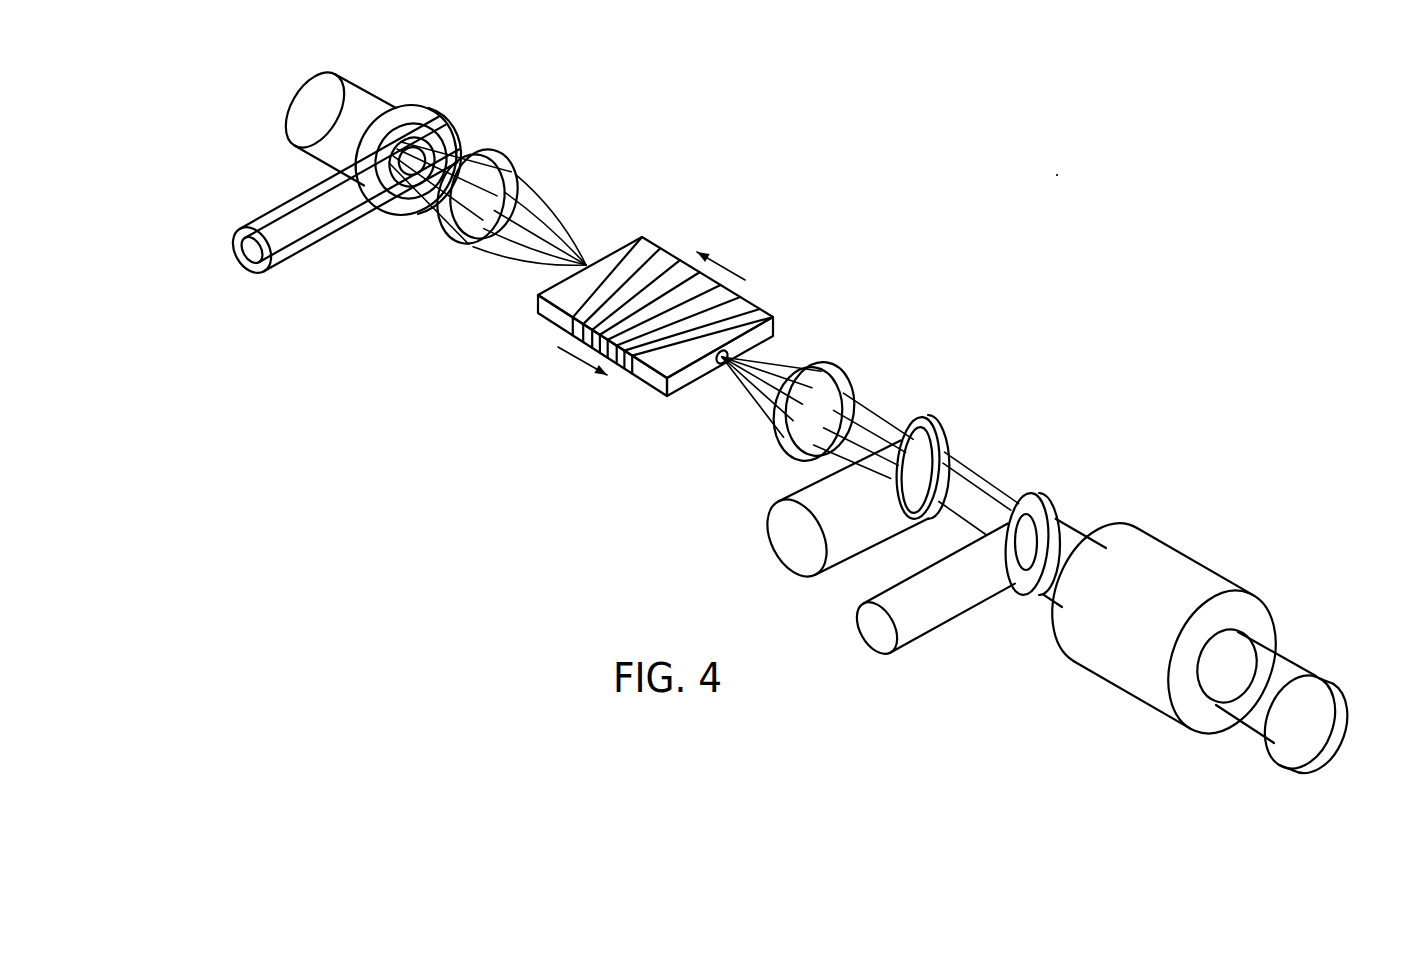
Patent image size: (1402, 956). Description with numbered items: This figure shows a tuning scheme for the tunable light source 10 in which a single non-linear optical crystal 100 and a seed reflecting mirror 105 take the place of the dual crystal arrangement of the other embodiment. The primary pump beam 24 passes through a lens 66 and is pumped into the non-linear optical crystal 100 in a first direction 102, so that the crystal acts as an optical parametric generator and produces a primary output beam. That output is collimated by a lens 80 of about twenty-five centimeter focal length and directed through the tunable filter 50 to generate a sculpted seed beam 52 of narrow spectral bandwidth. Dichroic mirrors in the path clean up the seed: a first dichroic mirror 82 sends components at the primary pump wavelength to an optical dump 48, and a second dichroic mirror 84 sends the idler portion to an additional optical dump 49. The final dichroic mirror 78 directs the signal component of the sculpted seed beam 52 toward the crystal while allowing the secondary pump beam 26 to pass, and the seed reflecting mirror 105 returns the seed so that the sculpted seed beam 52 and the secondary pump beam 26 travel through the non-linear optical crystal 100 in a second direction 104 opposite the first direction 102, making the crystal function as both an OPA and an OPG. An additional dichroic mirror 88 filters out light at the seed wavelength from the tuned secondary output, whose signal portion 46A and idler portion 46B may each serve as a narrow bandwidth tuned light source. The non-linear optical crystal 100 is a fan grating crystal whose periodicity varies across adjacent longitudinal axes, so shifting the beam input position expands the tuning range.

The tunable light source 10 is at (1062, 172).
The primary pump beam 24 is at (260, 85).
The secondary pump beam 26 is at (757, 557).
The signal portion of the secondary output beam 46A is at (265, 207).
The idler portion of the secondary output beam 46B is at (220, 268).
The optical dump 48 is at (906, 617).
The additional optical dump 49 is at (848, 643).
The tunable filter 50 is at (1213, 558).
The sculpted seed beam 52 is at (1075, 522).
The lens 66 is at (500, 162).
The dichroic mirror 78 is at (930, 418).
The lens 80 is at (850, 368).
The first dichroic mirror 82 is at (1011, 574).
The second dichroic mirror 84 is at (1033, 600).
The additional dichroic mirror 88 is at (405, 222).
The non-linear optical crystal 100 is at (630, 237).
The first direction 102 is at (576, 357).
The second direction 104 is at (728, 268).
The seed reflecting mirror 105 is at (1340, 685).